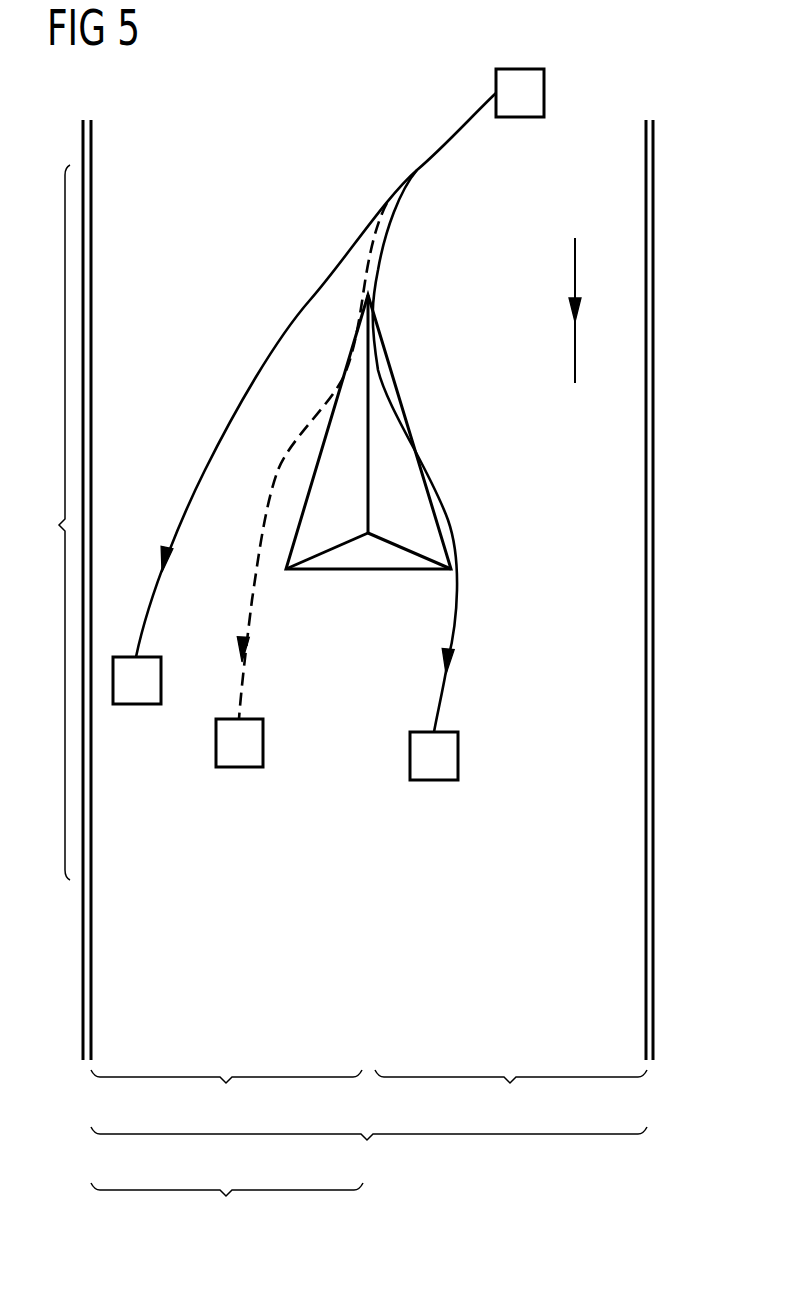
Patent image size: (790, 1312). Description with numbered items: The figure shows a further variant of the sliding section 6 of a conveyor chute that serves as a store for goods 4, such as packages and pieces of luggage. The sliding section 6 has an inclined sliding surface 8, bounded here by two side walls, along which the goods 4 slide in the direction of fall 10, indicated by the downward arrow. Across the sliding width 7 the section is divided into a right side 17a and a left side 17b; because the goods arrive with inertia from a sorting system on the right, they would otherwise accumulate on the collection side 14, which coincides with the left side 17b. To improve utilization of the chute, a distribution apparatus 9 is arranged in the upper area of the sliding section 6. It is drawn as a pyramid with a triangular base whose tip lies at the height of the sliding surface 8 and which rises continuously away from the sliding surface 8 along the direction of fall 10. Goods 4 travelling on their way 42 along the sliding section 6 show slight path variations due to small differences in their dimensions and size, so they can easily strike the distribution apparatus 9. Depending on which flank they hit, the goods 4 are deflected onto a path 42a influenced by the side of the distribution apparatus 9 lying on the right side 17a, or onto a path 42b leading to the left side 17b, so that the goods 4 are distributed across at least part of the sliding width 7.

The goods 4 is at (544, 93).
The sliding section 6 is at (55, 522).
The sliding width 7 is at (369, 1153).
The sliding surface 8 is at (602, 498).
The distribution apparatus 9 is at (335, 572).
The direction of fall 10 is at (575, 270).
The collection side 14 is at (227, 1210).
The right side 17a is at (511, 1097).
The left side 17b is at (226, 1097).
The way 42 is at (197, 483).
The path 42a is at (442, 702).
The path 42b is at (242, 700).